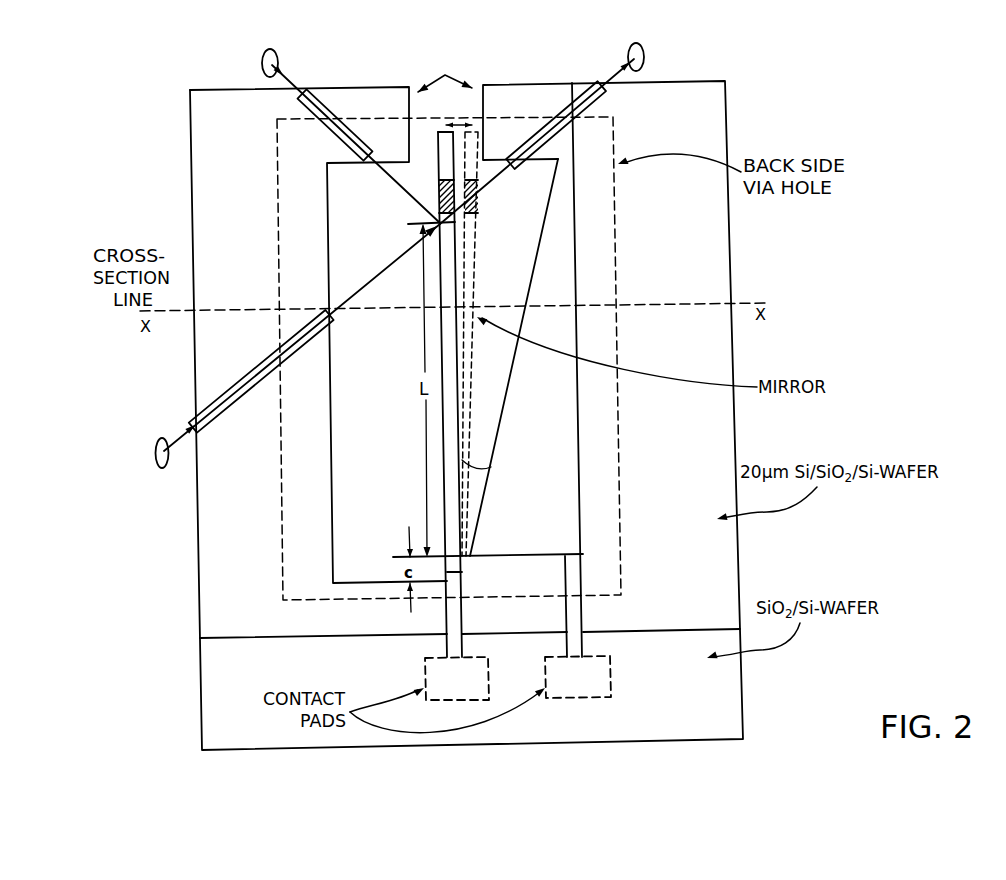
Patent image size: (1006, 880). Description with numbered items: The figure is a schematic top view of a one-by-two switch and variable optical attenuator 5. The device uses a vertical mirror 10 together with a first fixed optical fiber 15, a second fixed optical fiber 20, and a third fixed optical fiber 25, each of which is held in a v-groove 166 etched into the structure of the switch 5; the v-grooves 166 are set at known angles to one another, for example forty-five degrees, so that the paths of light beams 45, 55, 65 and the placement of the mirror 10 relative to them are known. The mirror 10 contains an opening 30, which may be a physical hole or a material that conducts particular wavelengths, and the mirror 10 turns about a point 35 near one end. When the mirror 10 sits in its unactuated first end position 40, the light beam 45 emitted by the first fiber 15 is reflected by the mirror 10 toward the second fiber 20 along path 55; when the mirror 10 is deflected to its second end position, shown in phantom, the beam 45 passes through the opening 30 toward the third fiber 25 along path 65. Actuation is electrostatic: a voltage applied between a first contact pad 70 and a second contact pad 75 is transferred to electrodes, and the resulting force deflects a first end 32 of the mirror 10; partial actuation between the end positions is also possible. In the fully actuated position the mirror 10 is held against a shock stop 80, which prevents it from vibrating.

The 1×2 switch and variable optical attenuator 5 is at (152, 107).
The vertical mirror 10 is at (440, 325).
The first fixed optical fiber 15 is at (158, 440).
The second fixed optical fiber 20 is at (270, 50).
The third fixed optical fiber 25 is at (634, 46).
The opening 30 is at (439, 197).
The first end 32 is at (438, 152).
The point 35 is at (468, 573).
The first end position 40 is at (443, 150).
The light beam 45 is at (380, 273).
The path 55 is at (390, 176).
The path 65 is at (500, 171).
The first contact pad 70 is at (470, 691).
The second contact pad 75 is at (589, 691).
The shock stop 80 is at (417, 90).
The v-grooves 166 is at (307, 88).